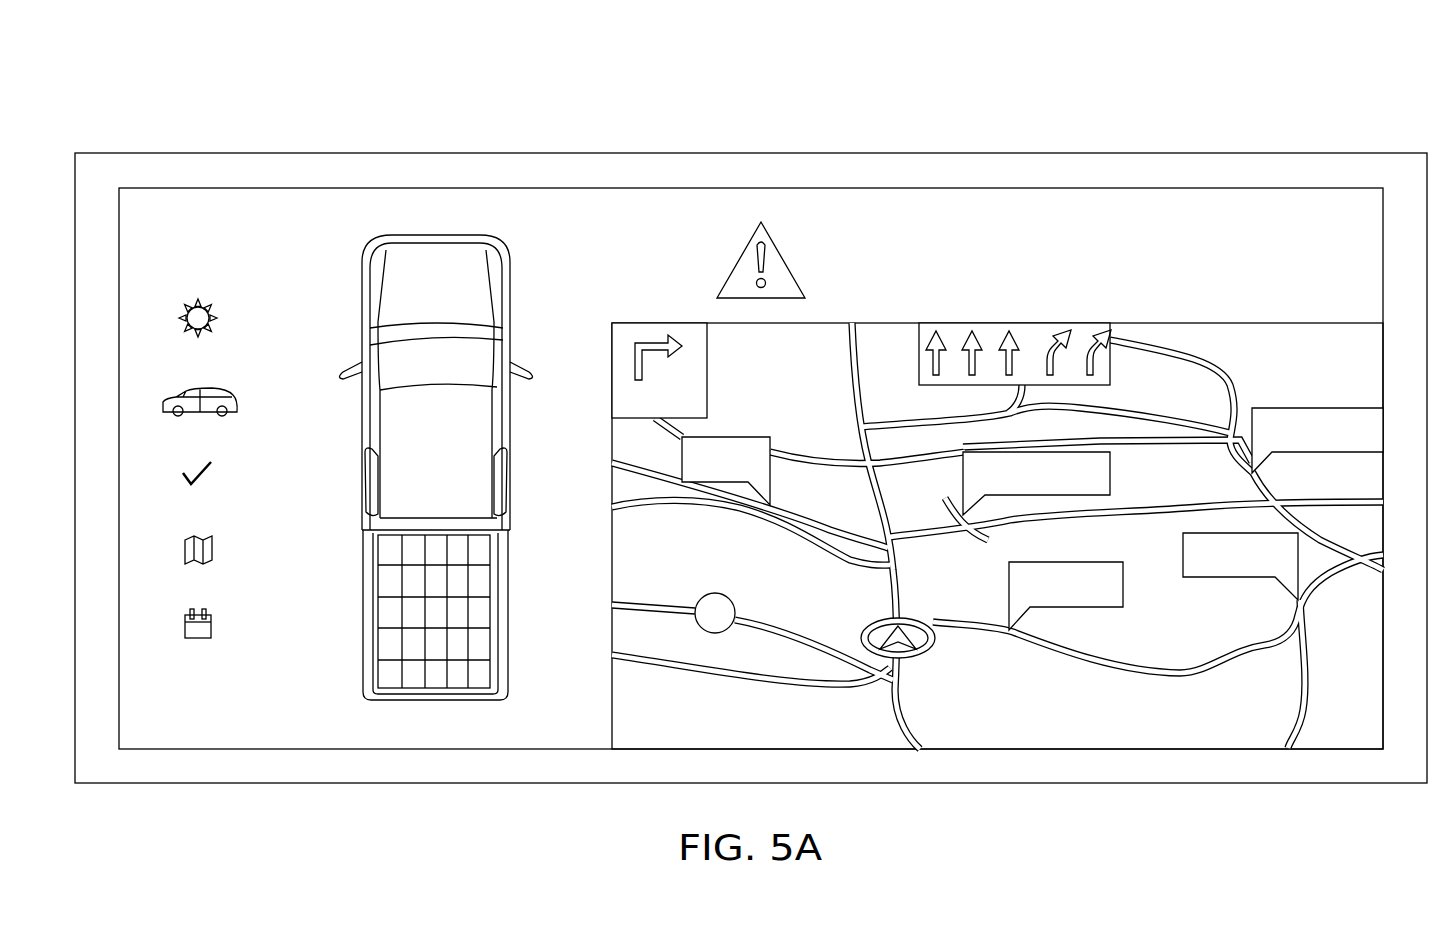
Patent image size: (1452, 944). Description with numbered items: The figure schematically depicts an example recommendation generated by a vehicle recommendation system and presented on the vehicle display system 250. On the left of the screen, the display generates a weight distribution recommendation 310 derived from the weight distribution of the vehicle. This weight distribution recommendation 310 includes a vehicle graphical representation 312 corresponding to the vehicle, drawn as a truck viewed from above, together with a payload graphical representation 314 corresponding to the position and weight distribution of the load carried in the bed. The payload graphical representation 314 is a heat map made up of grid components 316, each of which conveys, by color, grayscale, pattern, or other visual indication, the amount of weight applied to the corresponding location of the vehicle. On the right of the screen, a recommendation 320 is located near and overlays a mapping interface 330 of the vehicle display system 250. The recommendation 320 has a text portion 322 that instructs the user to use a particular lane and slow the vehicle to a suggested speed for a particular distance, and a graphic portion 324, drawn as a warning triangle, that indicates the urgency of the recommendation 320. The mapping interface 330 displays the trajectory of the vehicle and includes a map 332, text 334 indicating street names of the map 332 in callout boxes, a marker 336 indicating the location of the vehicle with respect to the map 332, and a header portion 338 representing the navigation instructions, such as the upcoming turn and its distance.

The vehicle display system 250 is at (196, 131).
The weight distribution recommendation 310 is at (339, 297).
The vehicle graphical representation 312 is at (362, 421).
The payload graphical representation 314 is at (384, 636).
The grid components 316 is at (484, 672).
The recommendation 320 is at (717, 246).
The text portion 322 is at (940, 212).
The graphic portion 324 is at (775, 248).
The mapping interface 330 is at (623, 311).
The map 332 is at (994, 713).
The text 334 is at (771, 470).
The marker 336 is at (872, 630).
The header portion 338 is at (809, 373).